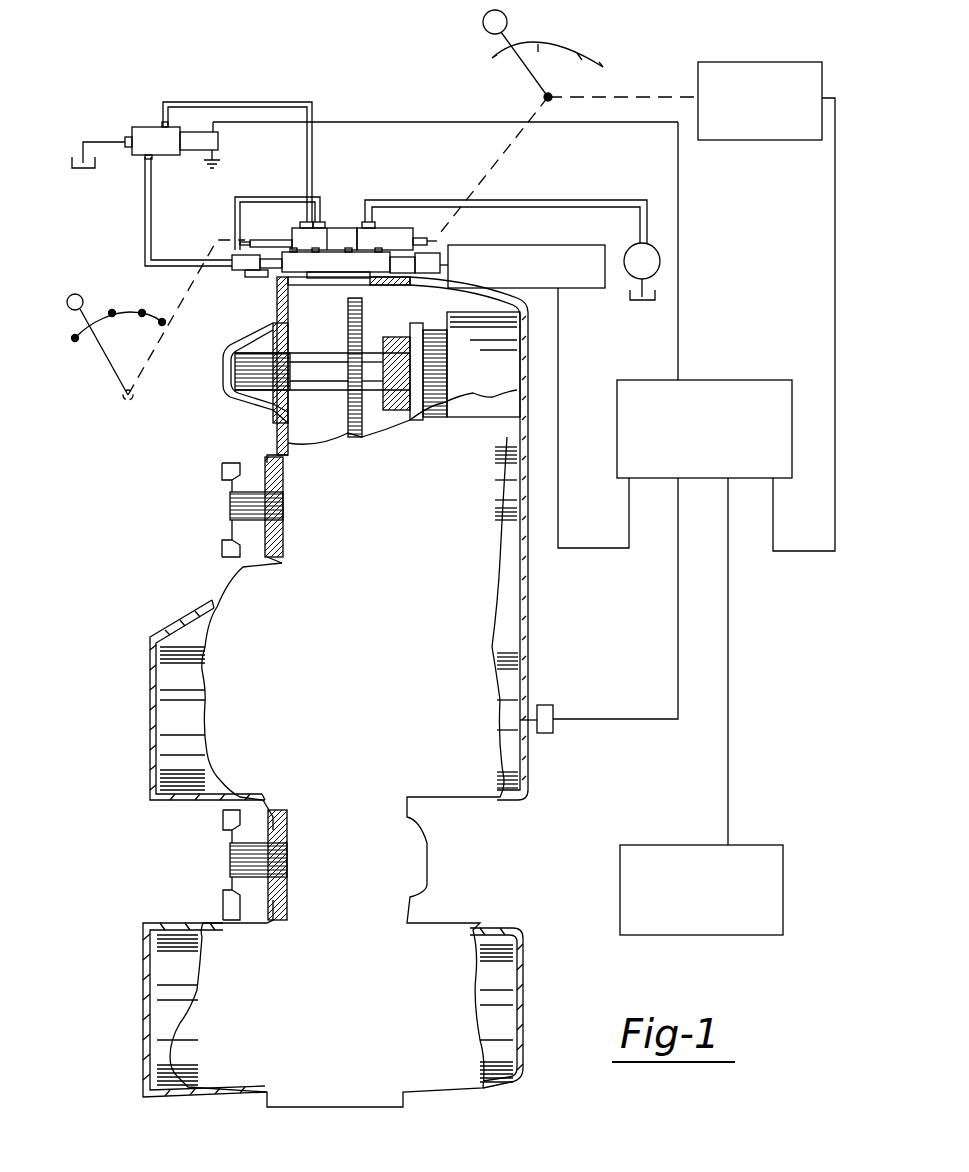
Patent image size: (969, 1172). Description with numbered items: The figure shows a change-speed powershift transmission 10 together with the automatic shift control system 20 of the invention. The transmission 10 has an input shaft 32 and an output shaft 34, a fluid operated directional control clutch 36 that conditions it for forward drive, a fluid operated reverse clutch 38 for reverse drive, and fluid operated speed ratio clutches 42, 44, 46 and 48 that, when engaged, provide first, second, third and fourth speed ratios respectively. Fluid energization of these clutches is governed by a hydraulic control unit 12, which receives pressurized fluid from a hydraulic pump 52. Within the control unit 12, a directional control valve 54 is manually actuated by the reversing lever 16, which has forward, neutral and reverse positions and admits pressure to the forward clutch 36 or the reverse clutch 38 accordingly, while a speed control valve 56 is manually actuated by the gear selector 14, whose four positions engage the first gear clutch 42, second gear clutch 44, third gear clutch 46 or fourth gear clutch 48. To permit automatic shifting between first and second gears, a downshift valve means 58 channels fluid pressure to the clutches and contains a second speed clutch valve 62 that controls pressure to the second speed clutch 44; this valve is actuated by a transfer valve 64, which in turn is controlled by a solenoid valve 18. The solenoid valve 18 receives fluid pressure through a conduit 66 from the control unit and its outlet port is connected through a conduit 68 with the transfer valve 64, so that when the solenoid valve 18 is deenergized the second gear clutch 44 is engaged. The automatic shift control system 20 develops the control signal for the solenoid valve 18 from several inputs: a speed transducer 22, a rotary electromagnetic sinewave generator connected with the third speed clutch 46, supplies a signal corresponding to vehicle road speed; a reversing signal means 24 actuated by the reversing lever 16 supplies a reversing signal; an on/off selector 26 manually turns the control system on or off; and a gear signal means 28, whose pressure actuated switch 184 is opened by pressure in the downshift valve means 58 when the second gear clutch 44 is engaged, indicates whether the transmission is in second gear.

The powershift transmission 10 is at (650, 585).
The hydraulic control unit 12 is at (355, 197).
The gear selector 14 is at (93, 352).
The reversing lever 16 is at (625, 78).
The solenoid valve 18 is at (130, 115).
The automatic shift control system 20 is at (765, 380).
The speed transducer 22 is at (545, 733).
The reversing signal means 24 is at (790, 30).
The on/off selector 26 is at (765, 845).
The gear signal means 28 is at (580, 245).
The input shaft 32 is at (226, 532).
The output shaft 34 is at (230, 884).
The directional control clutch 36 is at (519, 522).
The reverse clutch 38 is at (507, 365).
The first gear clutch 42 is at (163, 718).
The second gear clutch 44 is at (166, 990).
The third gear clutch 46 is at (508, 688).
The fourth gear clutch 48 is at (507, 988).
The hydraulic pump 52 is at (661, 250).
The directional control valve 54 is at (403, 235).
The speed control valve 56 is at (274, 232).
The downshift valve means 58 is at (342, 263).
The second speed clutch valve 62 is at (271, 270).
The transfer valve 64 is at (233, 269).
The conduit 66 is at (312, 140).
The conduit 68 is at (148, 192).
The pressure actuated switch 184 is at (402, 330).